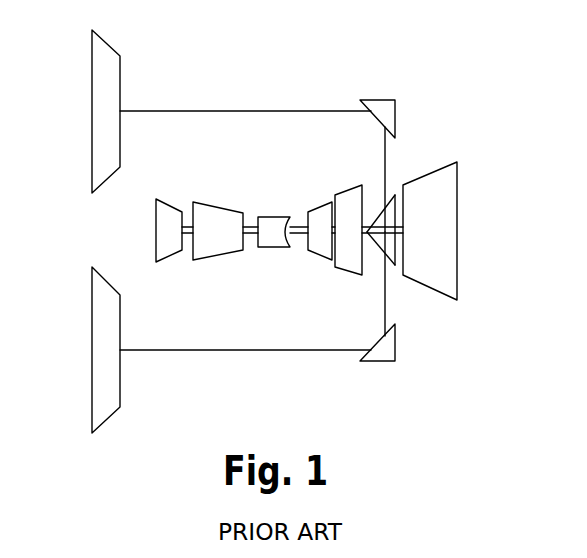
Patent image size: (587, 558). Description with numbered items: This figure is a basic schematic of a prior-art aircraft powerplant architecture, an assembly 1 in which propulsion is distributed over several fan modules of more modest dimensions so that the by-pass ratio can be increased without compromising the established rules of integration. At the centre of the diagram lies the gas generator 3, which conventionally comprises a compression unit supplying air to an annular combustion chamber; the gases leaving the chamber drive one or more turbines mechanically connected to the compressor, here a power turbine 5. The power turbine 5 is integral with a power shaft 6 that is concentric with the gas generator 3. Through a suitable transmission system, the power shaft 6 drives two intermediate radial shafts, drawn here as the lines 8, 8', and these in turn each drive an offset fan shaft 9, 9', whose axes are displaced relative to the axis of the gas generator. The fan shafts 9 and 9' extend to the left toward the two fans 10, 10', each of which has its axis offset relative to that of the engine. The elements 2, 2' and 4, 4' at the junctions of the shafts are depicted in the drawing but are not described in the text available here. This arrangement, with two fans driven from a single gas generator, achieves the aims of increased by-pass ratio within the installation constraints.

The assembly 1 is at (72, 224).
The light source 2 is at (429, 213).
The light source 2' is at (432, 251).
The gas generator 3 is at (249, 256).
The prism 4 is at (377, 87).
The prism 4' is at (377, 374).
The power turbine 5 is at (448, 180).
The power shaft 6 is at (380, 222).
The light path 8 is at (413, 179).
The light path 8' is at (415, 284).
The fan shaft 9 is at (245, 73).
The fan shaft 9' is at (245, 386).
The fan 10 is at (141, 111).
The fan 10' is at (142, 350).